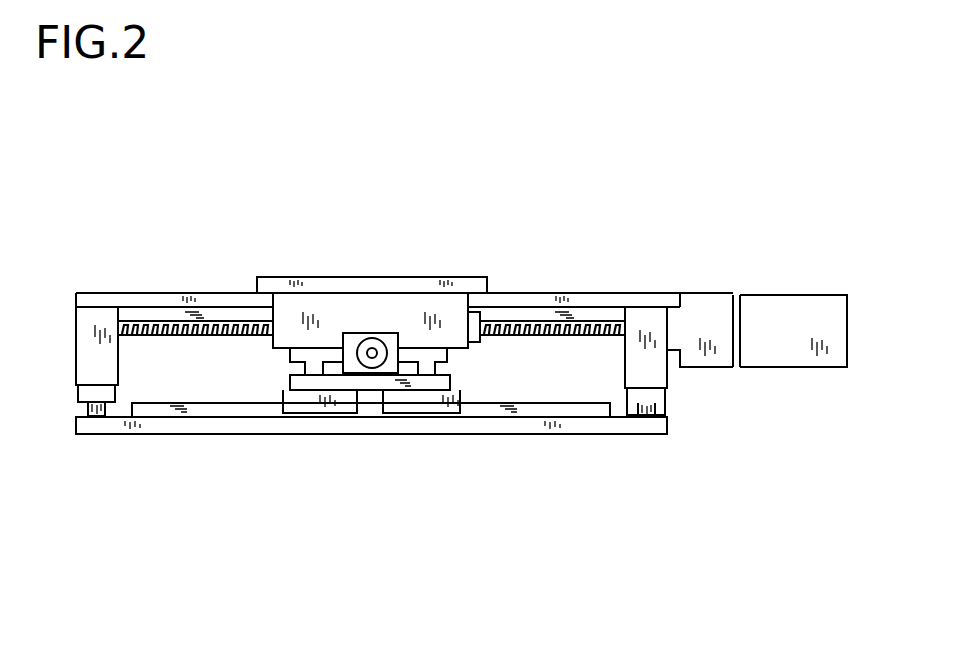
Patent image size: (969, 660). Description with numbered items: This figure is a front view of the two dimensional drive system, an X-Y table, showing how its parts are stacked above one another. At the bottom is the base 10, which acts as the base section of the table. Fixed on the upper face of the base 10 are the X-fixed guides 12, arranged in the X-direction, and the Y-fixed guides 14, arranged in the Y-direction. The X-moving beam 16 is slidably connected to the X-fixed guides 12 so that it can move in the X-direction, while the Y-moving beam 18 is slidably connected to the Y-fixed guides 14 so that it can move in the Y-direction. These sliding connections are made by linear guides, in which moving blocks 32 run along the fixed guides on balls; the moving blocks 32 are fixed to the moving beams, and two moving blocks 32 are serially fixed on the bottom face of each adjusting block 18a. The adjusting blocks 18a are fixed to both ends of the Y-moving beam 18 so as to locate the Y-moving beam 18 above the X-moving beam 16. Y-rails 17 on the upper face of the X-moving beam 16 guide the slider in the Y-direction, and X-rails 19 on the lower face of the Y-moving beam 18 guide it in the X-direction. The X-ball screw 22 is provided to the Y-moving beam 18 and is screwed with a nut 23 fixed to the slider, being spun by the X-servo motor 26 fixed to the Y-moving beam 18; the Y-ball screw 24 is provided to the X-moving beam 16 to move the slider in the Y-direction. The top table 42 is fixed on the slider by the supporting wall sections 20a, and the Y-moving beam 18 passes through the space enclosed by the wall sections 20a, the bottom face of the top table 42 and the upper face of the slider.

The base 10 is at (371, 494).
The X-fixed guides 12 is at (203, 412).
The Y-fixed guides 14 is at (97, 417).
The X-moving beam 16 is at (338, 386).
The Y-rails 17 is at (308, 375).
The Y-moving beam 18 is at (176, 292).
The adjusting blocks 18a is at (83, 343).
The X-rails 19 is at (212, 309).
The supporting wall sections 20a is at (381, 312).
The X-ball screw 22 is at (557, 338).
The nut 23 is at (482, 340).
The Y-ball screw 24 is at (372, 355).
The X-servo motor 26 is at (783, 312).
The moving blocks 32 is at (88, 402).
The top table 42 is at (347, 282).